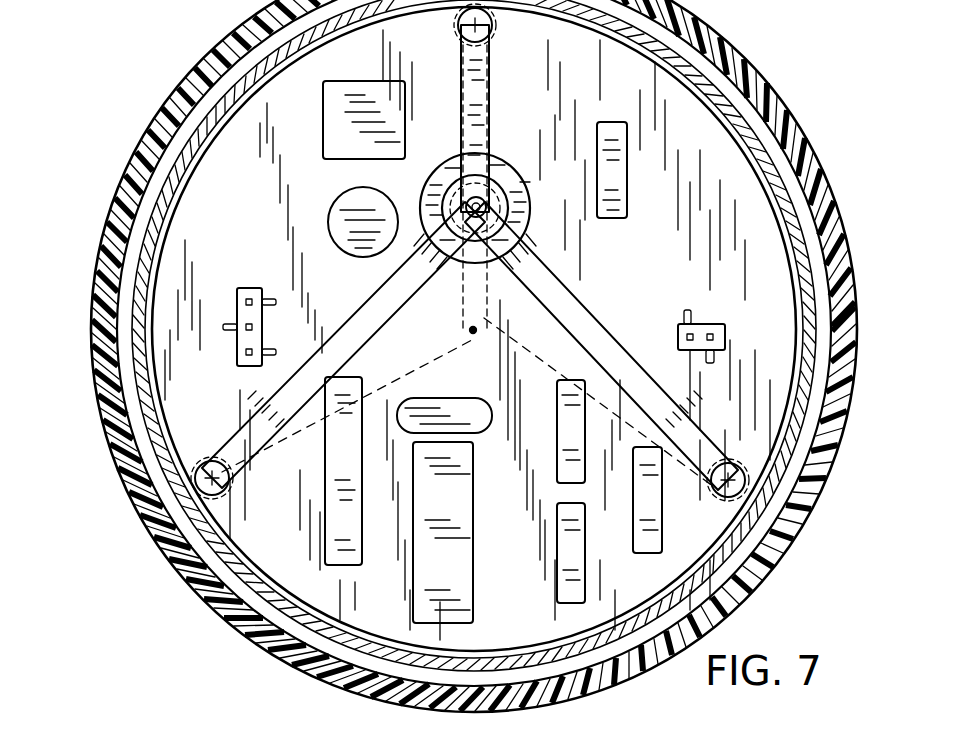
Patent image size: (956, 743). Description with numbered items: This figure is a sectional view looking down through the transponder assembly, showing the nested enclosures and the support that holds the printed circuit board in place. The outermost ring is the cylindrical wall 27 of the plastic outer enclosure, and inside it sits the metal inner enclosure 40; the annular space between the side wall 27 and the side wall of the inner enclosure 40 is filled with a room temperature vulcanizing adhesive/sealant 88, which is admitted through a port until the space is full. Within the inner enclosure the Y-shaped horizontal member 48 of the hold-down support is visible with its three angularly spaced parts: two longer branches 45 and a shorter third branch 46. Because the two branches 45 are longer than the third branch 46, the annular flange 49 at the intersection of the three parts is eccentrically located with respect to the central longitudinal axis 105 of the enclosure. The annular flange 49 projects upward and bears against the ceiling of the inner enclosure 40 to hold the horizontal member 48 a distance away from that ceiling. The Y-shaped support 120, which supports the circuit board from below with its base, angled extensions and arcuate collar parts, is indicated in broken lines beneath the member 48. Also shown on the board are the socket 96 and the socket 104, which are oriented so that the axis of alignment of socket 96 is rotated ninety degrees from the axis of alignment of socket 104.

The cylindrical wall 27 is at (125, 483).
The inner enclosure 40 is at (132, 288).
The room temperature vulcanizing adhesive/sealant 88 is at (146, 212).
The socket 104 is at (255, 288).
The socket 96 is at (722, 323).
The third branch 46 is at (480, 110).
The branches 45 is at (445, 268).
The Y-shaped horizontal member 48 is at (570, 286).
The Y-shaped support 120 is at (263, 468).
The annular flange 49 is at (524, 182).
The central longitudinal axis 105 is at (474, 333).